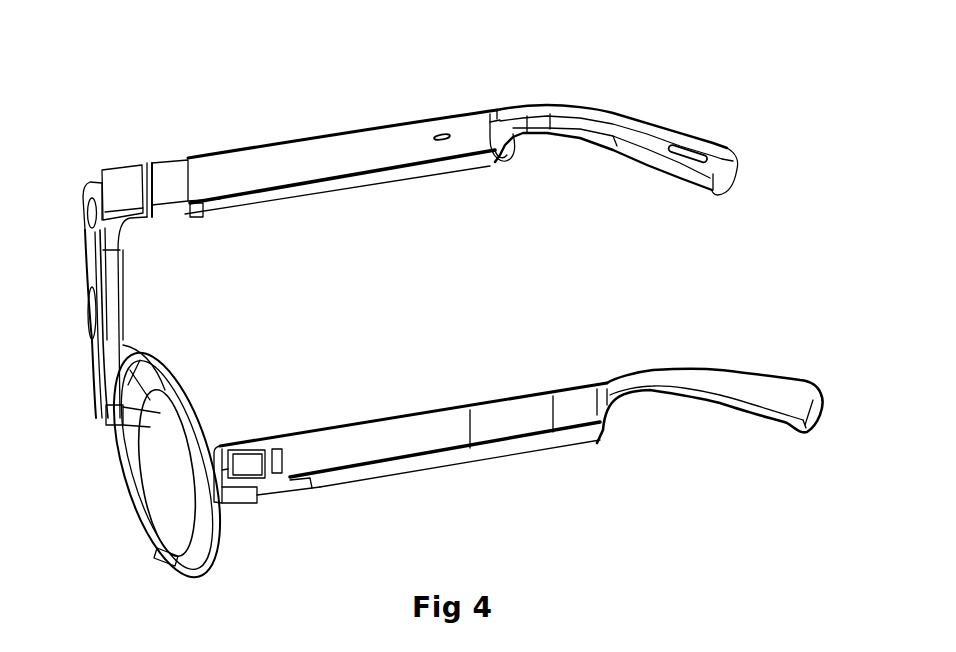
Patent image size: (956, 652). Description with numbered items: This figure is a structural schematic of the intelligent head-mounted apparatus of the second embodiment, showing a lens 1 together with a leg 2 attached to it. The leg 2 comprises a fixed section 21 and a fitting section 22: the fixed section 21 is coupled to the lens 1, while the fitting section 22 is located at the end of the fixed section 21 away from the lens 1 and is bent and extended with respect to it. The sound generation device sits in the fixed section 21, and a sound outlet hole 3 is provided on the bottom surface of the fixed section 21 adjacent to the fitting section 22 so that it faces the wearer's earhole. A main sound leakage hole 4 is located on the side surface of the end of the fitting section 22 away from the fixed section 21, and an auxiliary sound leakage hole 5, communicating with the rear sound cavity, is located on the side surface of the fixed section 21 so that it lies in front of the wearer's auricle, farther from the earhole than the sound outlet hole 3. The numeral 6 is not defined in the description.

The lens 1 is at (170, 477).
The leg 2 is at (405, 438).
The fixed section 21 is at (373, 150).
The fitting section 22 is at (633, 130).
The sound outlet hole 3 is at (503, 163).
The main sound leakage hole 4 is at (690, 143).
The auxiliary sound leakage hole 5 is at (445, 131).
The hinge 6 is at (115, 190).